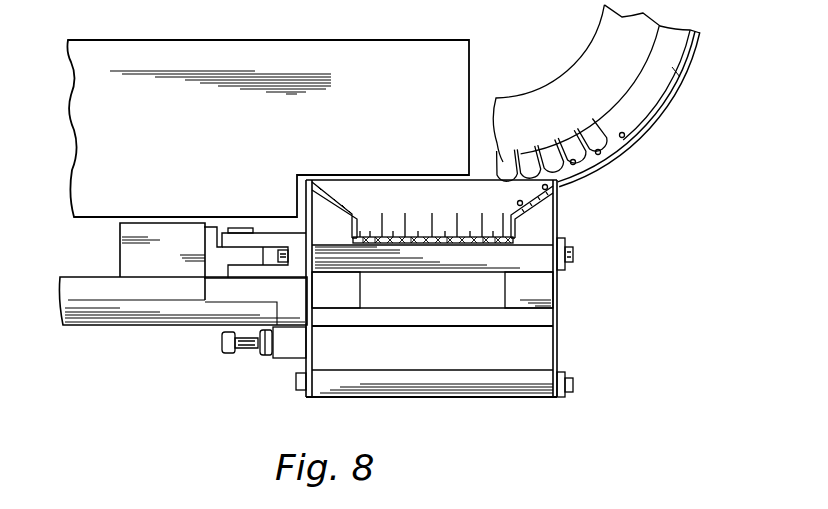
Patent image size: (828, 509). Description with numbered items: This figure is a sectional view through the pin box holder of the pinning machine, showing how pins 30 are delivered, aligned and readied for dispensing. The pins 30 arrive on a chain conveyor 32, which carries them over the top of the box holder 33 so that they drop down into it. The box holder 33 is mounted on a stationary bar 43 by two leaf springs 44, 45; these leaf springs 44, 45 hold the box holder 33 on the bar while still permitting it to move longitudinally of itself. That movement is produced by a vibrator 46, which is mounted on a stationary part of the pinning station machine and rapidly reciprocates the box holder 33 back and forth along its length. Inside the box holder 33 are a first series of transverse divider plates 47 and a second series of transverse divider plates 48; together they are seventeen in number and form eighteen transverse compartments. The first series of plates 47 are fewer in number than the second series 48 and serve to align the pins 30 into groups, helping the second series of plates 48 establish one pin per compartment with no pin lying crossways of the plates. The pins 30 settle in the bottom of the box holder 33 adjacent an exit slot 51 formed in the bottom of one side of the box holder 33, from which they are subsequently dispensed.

The pins 30 is at (532, 212).
The chain conveyor 32 is at (603, 168).
The box holder 33 is at (542, 203).
The stationary bar 43 is at (462, 394).
The leaf spring 44 is at (312, 360).
The leaf spring 45 is at (557, 346).
The vibrator 46 is at (122, 254).
The first series of transverse divider plates 47 is at (405, 223).
The second series of transverse divider plates 48 is at (446, 235).
The exit slot 51 is at (508, 243).